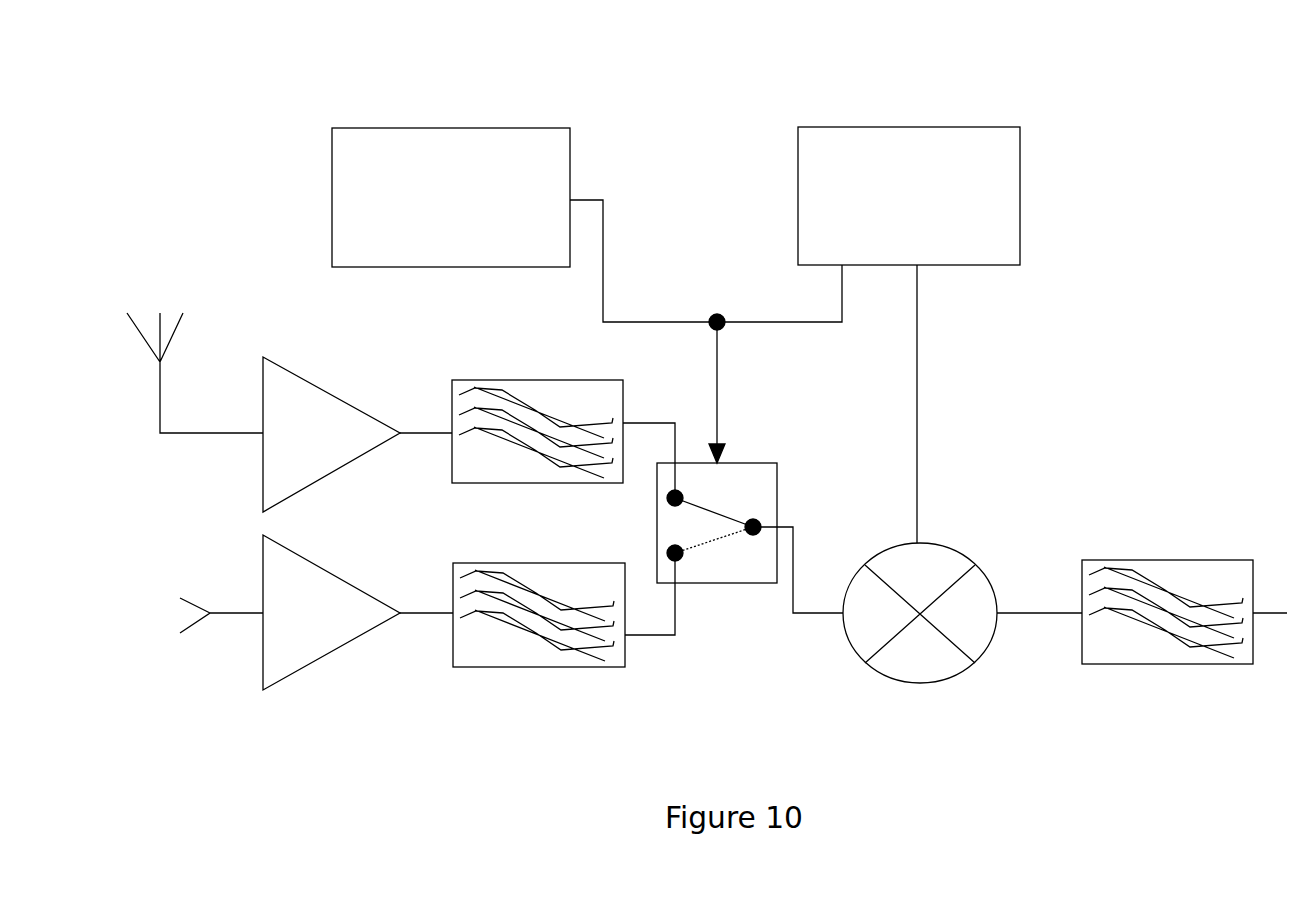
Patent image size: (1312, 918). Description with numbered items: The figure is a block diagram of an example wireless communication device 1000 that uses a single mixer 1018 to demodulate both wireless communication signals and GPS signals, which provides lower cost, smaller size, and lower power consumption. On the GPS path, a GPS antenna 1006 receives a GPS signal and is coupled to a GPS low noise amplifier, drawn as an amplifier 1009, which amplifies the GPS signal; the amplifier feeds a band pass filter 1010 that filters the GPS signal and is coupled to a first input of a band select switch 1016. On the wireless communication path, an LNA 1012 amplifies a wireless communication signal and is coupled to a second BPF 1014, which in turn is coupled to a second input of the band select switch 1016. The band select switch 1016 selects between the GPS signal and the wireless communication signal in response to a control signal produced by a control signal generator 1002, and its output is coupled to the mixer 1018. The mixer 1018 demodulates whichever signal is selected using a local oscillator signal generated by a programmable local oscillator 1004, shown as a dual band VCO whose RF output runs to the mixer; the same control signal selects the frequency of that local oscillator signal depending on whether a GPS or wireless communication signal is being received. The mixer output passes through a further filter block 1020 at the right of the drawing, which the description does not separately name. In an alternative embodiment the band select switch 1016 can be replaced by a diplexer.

The wireless communication device 1000 is at (1282, 131).
The control signal generator 1002 is at (435, 126).
The programmable local oscillator 1004 is at (1022, 200).
The GPS antenna 1006 is at (183, 330).
The GPS low noise amplifier 1009 is at (327, 387).
The band pass filter 1010 is at (535, 376).
The LNA 1012 is at (350, 580).
The second BPF 1014 is at (522, 557).
The band select switch 1016 is at (743, 458).
The mixer 1018 is at (962, 554).
The output filter 1020 is at (1163, 553).